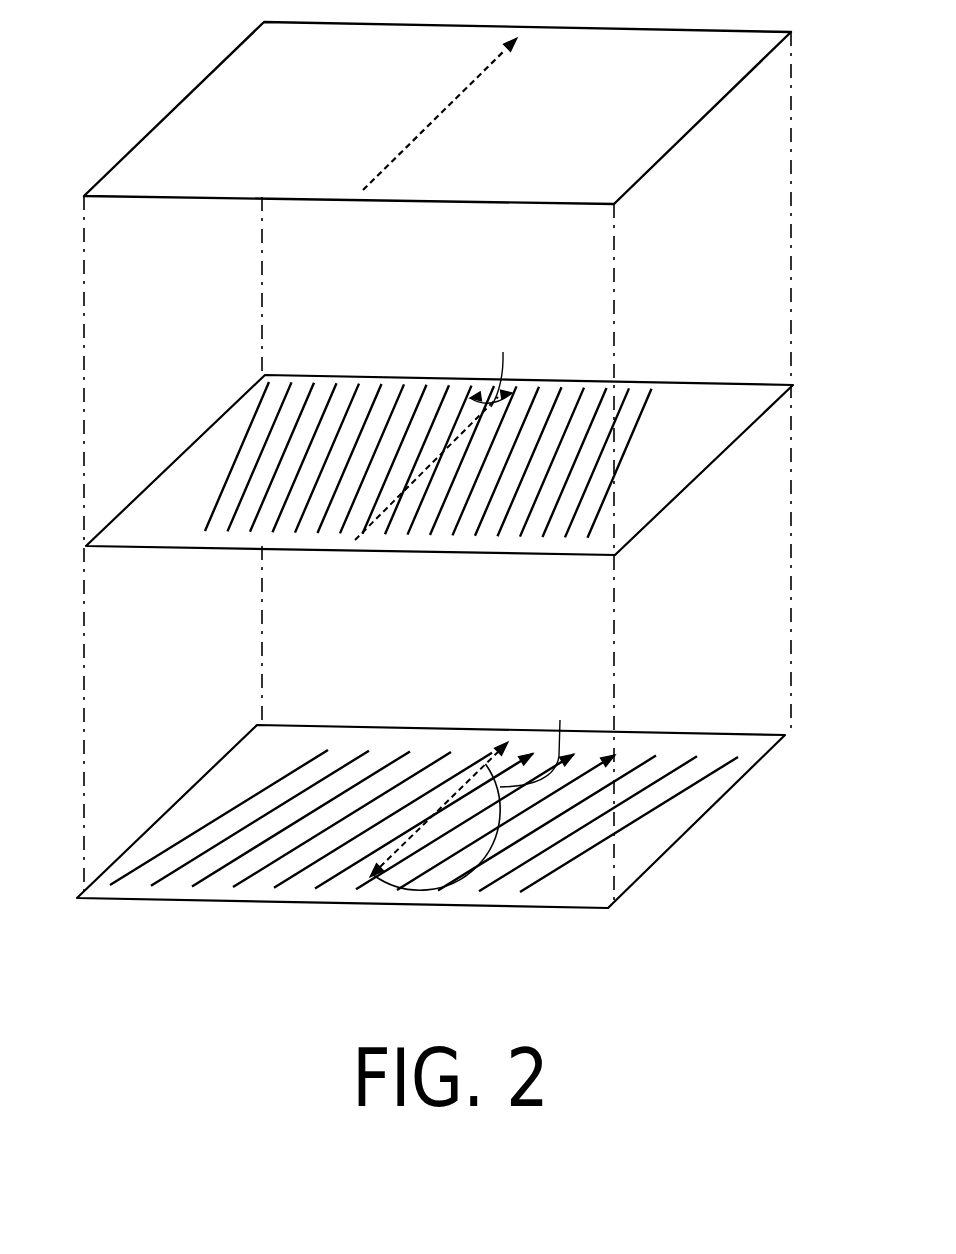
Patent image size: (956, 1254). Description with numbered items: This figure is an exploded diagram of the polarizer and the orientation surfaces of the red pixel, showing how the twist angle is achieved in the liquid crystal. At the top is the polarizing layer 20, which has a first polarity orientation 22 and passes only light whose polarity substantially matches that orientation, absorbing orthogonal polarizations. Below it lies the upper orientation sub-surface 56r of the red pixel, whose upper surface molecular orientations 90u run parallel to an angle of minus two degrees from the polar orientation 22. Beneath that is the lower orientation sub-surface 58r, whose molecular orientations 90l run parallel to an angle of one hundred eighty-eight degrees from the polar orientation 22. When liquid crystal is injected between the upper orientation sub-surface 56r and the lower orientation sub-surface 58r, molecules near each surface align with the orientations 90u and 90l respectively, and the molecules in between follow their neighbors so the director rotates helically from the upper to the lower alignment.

The polarizing layer 20 is at (245, 126).
The first polarity orientation 22 is at (427, 127).
The upper orientation sub-surface 56r is at (665, 492).
The lower orientation sub-surface 58r is at (672, 832).
The upper surface molecular orientations 90u is at (223, 488).
The lower surface molecular orientations 90l is at (245, 798).